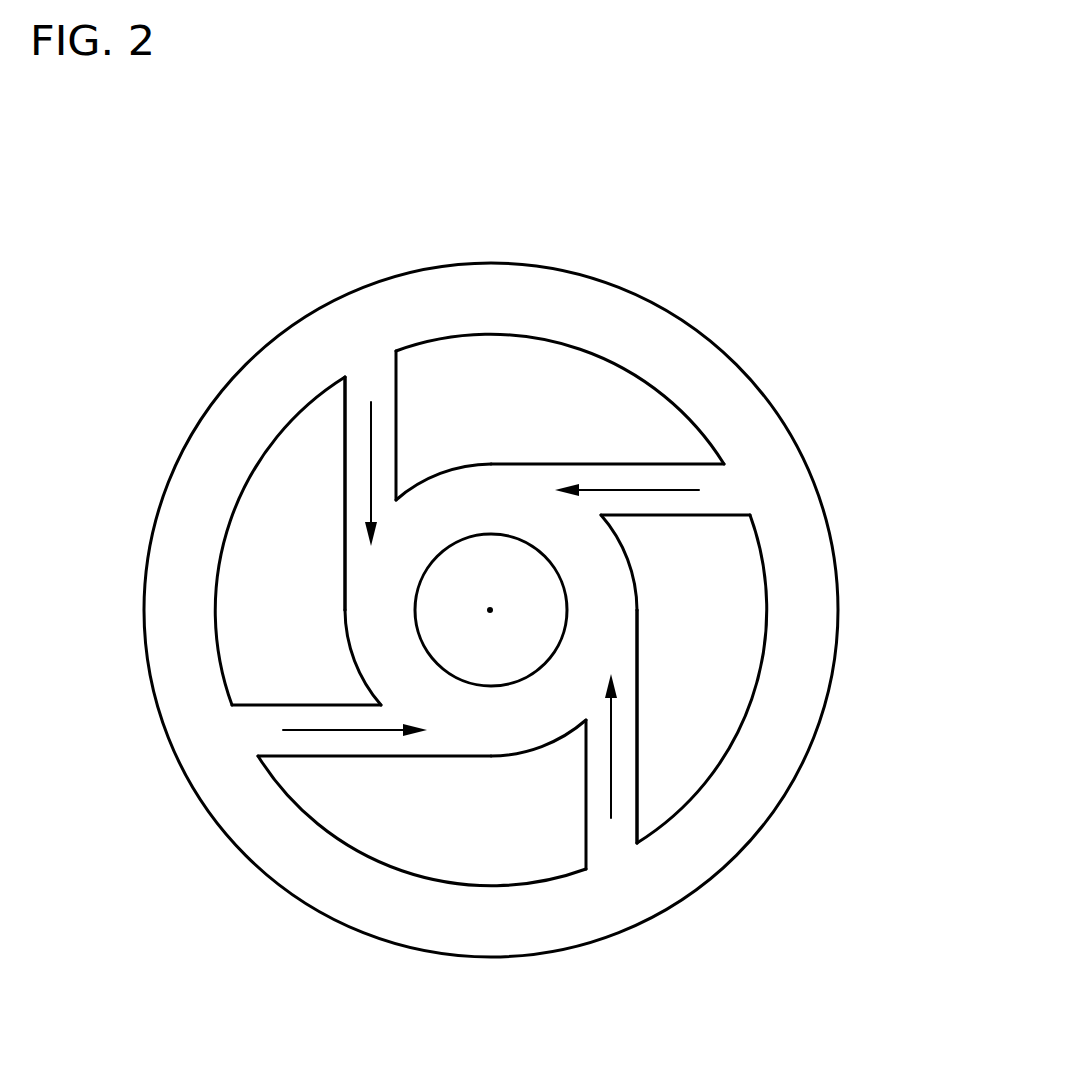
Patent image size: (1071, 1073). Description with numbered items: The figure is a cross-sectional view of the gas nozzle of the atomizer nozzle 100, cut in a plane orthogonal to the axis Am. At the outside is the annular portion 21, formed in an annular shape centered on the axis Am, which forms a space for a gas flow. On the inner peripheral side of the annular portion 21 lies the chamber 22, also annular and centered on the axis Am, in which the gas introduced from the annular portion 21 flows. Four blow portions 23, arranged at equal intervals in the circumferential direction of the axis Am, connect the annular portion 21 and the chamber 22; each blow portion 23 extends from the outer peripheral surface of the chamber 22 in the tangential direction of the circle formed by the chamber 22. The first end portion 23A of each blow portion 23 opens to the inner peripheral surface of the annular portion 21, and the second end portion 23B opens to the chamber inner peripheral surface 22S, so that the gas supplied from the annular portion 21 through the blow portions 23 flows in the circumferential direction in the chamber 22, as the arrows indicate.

The atomizer nozzle 100 is at (148, 246).
The annular portion 21 is at (770, 397).
The chamber 22 is at (638, 590).
The chamber inner peripheral surface 22S is at (348, 638).
The blow portion 23 is at (553, 465).
The first end portion 23A is at (398, 352).
The second end portion 23B is at (398, 502).
The axis Am is at (490, 611).